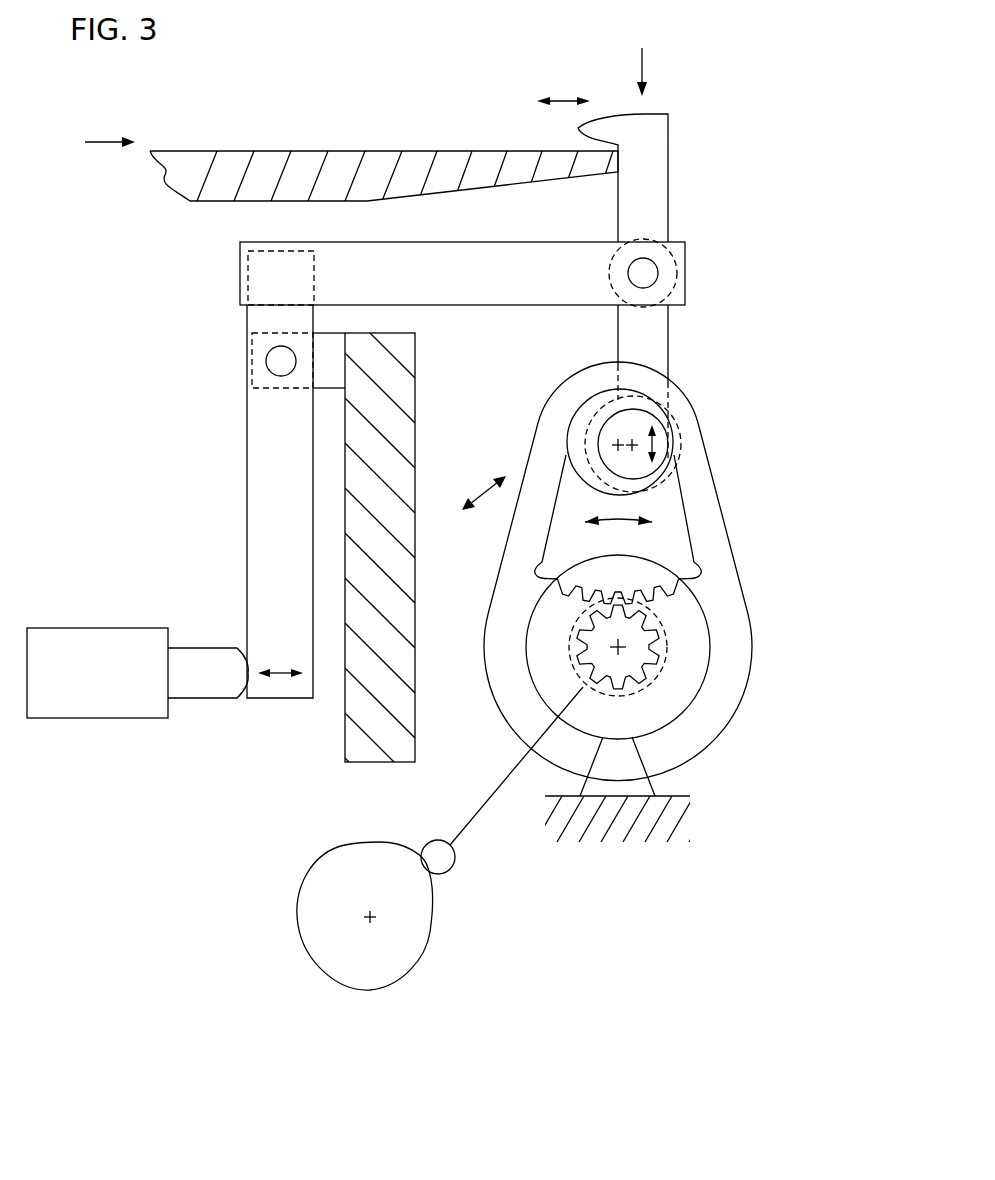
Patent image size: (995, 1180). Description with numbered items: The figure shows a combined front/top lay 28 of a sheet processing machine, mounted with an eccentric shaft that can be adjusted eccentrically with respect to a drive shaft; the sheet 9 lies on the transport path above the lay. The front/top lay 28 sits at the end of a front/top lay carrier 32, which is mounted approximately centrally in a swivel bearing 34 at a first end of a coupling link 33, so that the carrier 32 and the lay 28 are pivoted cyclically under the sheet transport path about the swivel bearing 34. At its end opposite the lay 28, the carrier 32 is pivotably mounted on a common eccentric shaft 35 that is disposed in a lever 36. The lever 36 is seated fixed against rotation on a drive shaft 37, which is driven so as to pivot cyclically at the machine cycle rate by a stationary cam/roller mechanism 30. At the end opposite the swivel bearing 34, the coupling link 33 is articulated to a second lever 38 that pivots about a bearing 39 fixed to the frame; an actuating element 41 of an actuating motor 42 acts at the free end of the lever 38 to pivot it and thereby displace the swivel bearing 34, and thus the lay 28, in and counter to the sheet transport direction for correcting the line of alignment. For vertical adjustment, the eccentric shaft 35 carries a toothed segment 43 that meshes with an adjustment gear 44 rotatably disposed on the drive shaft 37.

The workpiece 9 is at (310, 158).
The combined front/top lay 28 is at (637, 130).
The cam/roller mechanism 30 is at (478, 941).
The front/top lay carrier 32 is at (650, 340).
The coupling link 33 is at (422, 258).
The swivel bearing 34 is at (645, 272).
The eccentric shaft 35 is at (633, 423).
The lever 36 is at (718, 698).
The drive shaft 37 is at (662, 705).
The second lever 38 is at (275, 460).
The bearing fixed to the frame 39 is at (281, 361).
The actuating element 41 is at (202, 682).
The actuating motor 42 is at (85, 688).
The toothed segment 43 is at (662, 543).
The adjustment gear 44 is at (640, 630).